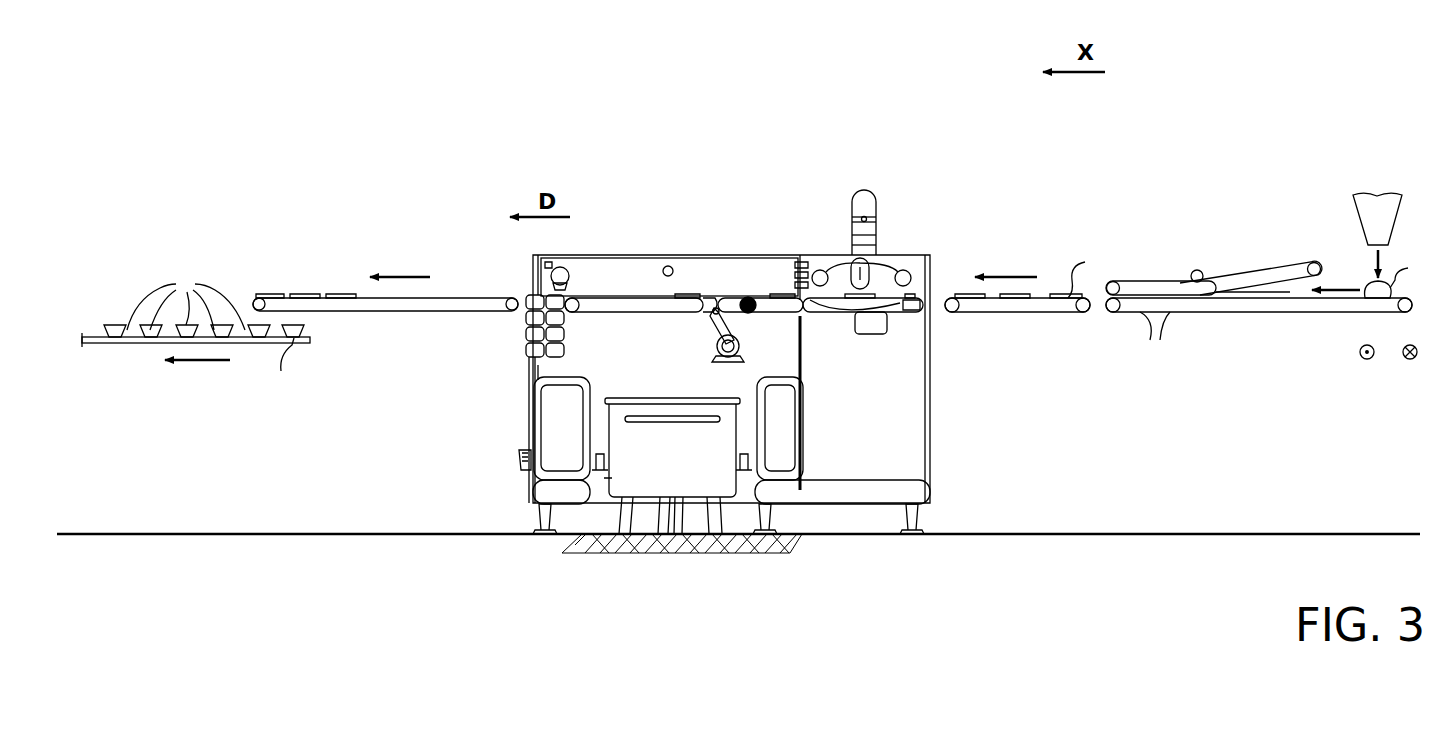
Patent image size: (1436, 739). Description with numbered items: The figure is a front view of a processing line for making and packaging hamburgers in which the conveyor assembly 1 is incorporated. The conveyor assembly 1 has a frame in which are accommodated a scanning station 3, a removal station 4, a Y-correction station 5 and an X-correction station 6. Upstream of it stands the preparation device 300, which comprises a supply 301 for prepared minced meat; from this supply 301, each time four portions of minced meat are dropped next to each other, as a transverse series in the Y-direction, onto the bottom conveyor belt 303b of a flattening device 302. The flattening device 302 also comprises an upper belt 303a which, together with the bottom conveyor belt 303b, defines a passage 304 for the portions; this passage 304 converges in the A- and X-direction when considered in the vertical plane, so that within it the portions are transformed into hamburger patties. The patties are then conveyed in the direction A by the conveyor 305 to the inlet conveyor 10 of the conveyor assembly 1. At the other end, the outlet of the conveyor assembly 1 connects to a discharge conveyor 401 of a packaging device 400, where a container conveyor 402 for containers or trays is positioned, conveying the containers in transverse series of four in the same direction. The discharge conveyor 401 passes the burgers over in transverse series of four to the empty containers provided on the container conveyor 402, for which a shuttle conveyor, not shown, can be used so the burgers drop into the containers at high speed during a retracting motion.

The conveyor assembly 1 is at (935, 200).
The scanning station 3 is at (822, 262).
The removal station 4 is at (724, 262).
The Y-correction station 5 is at (636, 272).
The X-correction station 6 is at (561, 276).
The inlet conveyor 10 is at (900, 305).
The preparation device 300 is at (1281, 105).
The supply 301 is at (1375, 202).
The flattening device 302 is at (1275, 245).
The upper belt 303a is at (1245, 276).
The bottom conveyor belt 303b is at (1288, 312).
The passage 304 is at (1196, 302).
The conveyor 305 is at (1052, 312).
The packaging device 400 is at (133, 285).
The discharge conveyor 401 is at (465, 297).
The container conveyor 402 is at (92, 344).